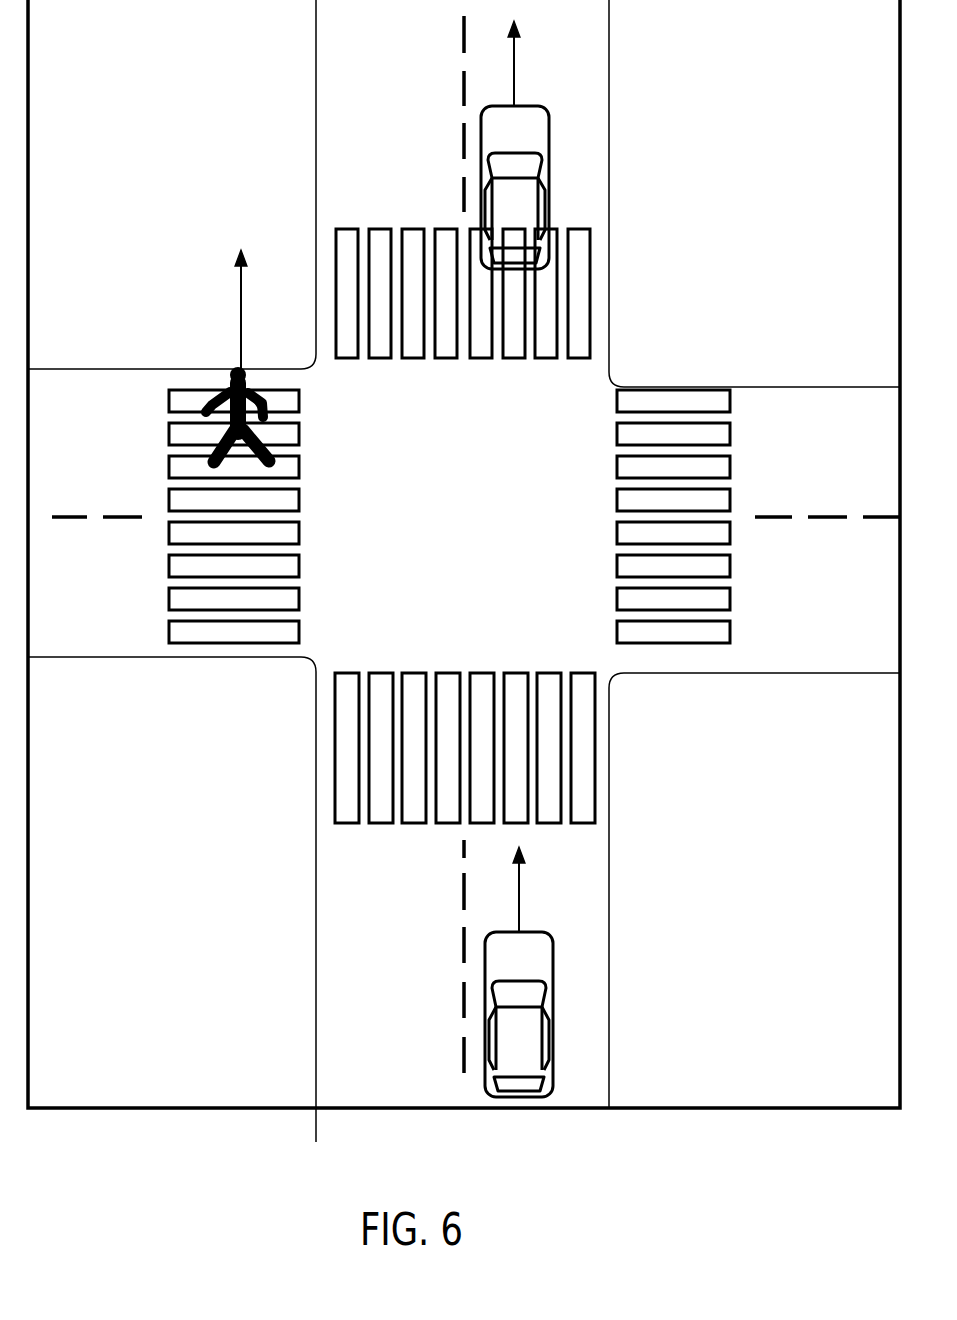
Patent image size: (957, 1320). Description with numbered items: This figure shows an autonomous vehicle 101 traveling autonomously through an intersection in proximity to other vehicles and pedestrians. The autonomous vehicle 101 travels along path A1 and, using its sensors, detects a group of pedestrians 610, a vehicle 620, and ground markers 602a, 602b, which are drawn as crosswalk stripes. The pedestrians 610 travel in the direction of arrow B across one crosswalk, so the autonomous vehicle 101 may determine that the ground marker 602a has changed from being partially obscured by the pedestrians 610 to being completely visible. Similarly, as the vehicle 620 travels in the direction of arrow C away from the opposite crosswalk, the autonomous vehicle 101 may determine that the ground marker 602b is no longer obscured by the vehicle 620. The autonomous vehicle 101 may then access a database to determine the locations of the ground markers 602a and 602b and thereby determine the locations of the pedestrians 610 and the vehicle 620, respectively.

The autonomous vehicle 101 is at (553, 1004).
The vehicle 620 is at (549, 140).
The pedestrians 610 is at (233, 380).
The ground marker 602a is at (300, 465).
The ground marker 602b is at (535, 360).
The path A1 is at (519, 900).
The arrow B is at (240, 314).
The arrow C is at (512, 66).